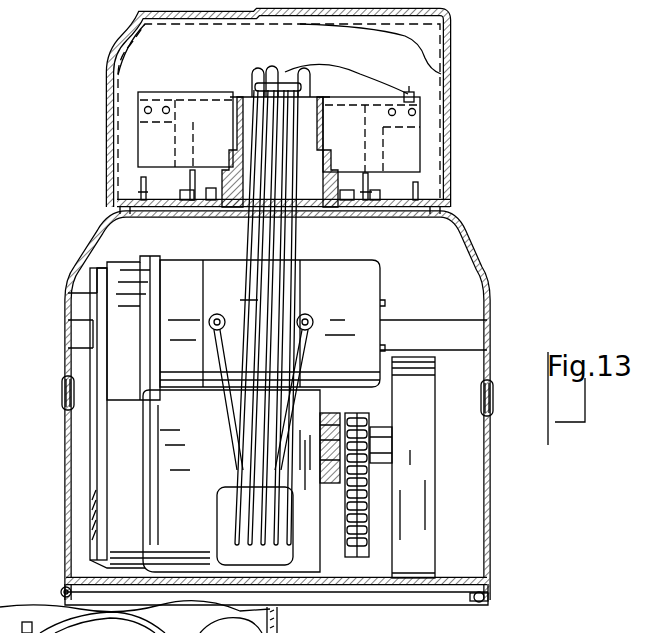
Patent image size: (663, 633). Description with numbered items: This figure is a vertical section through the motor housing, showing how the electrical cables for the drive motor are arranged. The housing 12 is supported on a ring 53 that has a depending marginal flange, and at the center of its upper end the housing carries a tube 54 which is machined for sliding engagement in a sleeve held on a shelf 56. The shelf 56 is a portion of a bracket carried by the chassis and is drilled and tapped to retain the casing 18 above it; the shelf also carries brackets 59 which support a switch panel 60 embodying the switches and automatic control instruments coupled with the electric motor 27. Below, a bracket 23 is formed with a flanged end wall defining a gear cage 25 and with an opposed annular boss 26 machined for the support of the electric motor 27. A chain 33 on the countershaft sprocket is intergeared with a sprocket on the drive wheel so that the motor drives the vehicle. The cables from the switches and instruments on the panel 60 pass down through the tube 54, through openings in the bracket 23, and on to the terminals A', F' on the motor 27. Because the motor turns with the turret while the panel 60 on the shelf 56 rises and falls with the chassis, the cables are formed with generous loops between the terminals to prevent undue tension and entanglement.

The housing 12 is at (472, 276).
The casing 18 is at (447, 139).
The bracket 23 is at (205, 492).
The gear cage 25 is at (98, 296).
The annular boss 26 is at (153, 268).
The electric motor 27 is at (352, 279).
The chain 33 is at (340, 548).
The ring 53 is at (453, 584).
The tube 54 is at (309, 138).
The shelf 56 is at (121, 209).
The brackets 59 is at (180, 180).
The switch panel 60 is at (420, 168).
The motor terminal A' is at (226, 384).
The motor terminal F' is at (303, 384).